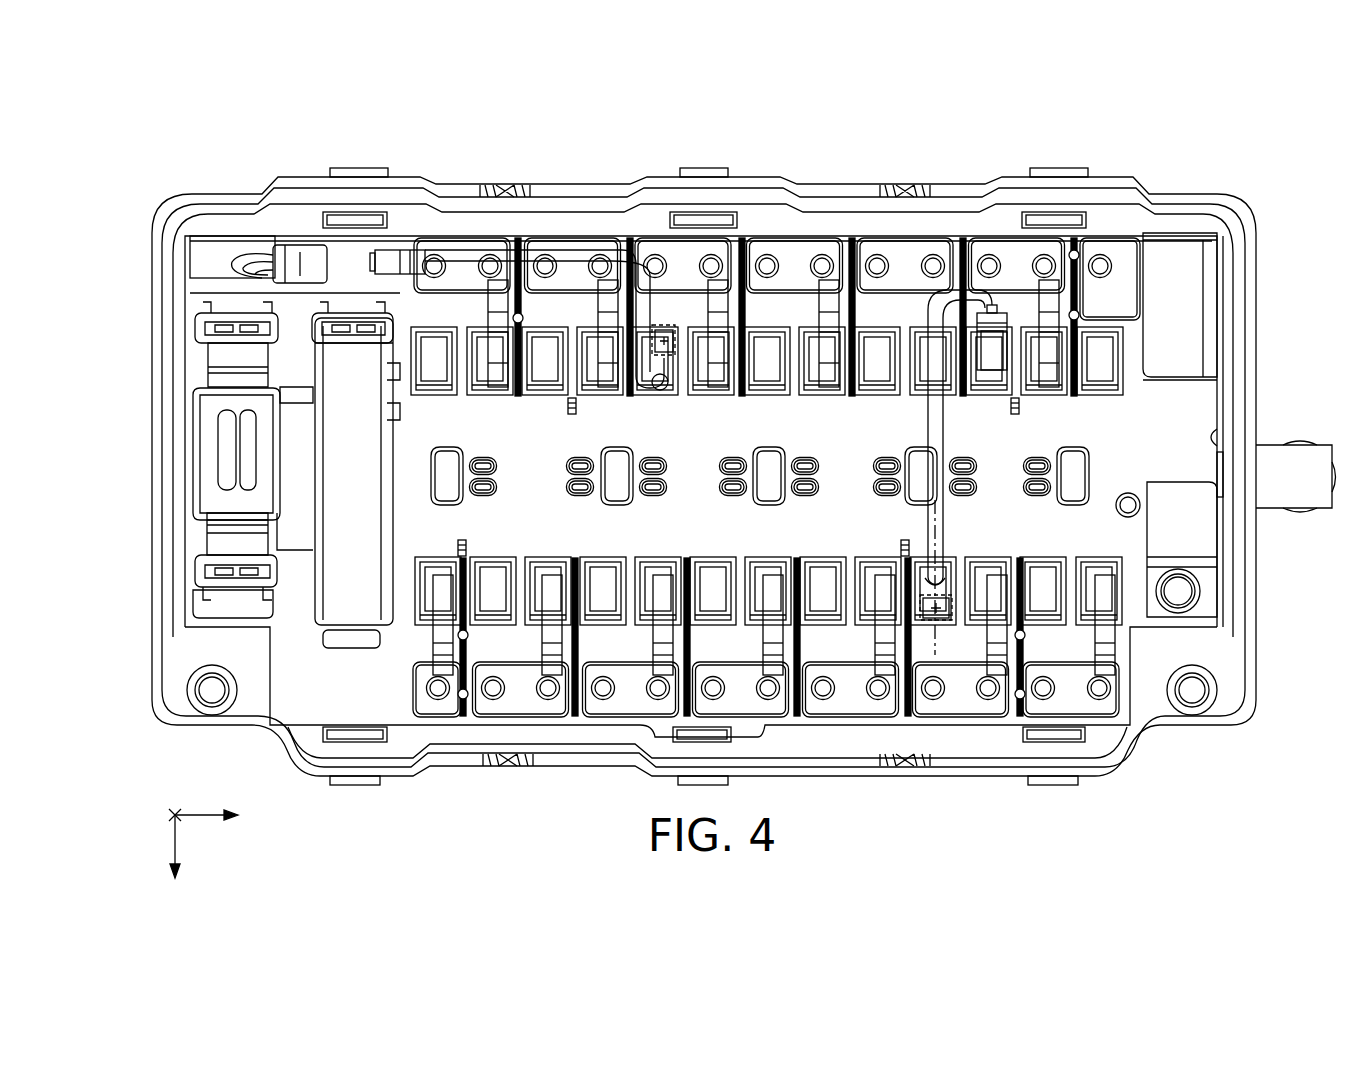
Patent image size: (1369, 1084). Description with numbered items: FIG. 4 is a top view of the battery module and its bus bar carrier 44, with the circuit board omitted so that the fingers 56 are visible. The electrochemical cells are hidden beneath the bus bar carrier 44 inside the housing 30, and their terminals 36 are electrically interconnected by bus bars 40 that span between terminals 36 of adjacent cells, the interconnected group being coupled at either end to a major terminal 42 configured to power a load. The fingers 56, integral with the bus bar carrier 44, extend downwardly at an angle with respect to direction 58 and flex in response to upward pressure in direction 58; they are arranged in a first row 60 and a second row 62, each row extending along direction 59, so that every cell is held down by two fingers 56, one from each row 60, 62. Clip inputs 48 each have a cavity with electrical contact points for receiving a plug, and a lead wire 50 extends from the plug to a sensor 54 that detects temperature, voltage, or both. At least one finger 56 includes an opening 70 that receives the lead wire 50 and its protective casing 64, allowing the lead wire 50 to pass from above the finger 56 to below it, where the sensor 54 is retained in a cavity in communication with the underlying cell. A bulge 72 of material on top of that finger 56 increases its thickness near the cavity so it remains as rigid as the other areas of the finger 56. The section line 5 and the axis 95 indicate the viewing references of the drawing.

The section line 5- 5 is at (935, 497).
The housing 30 is at (160, 470).
The terminals 36 is at (985, 255).
The bus bars 40 is at (1012, 255).
The major terminal 42 is at (212, 690).
The bus bar carrier 44 is at (1100, 228).
The clip input 48 is at (386, 250).
The lead wire 50 is at (480, 252).
The sensor 54 is at (665, 325).
The fingers 56 is at (715, 395).
The direction 58 is at (172, 812).
The direction 59 is at (203, 818).
The first row 60 is at (142, 557).
The second row 62 is at (142, 322).
The protective casing 64 is at (540, 258).
The opening 70 is at (668, 385).
The bulge 72 is at (668, 360).
The third axis 95 is at (172, 848).